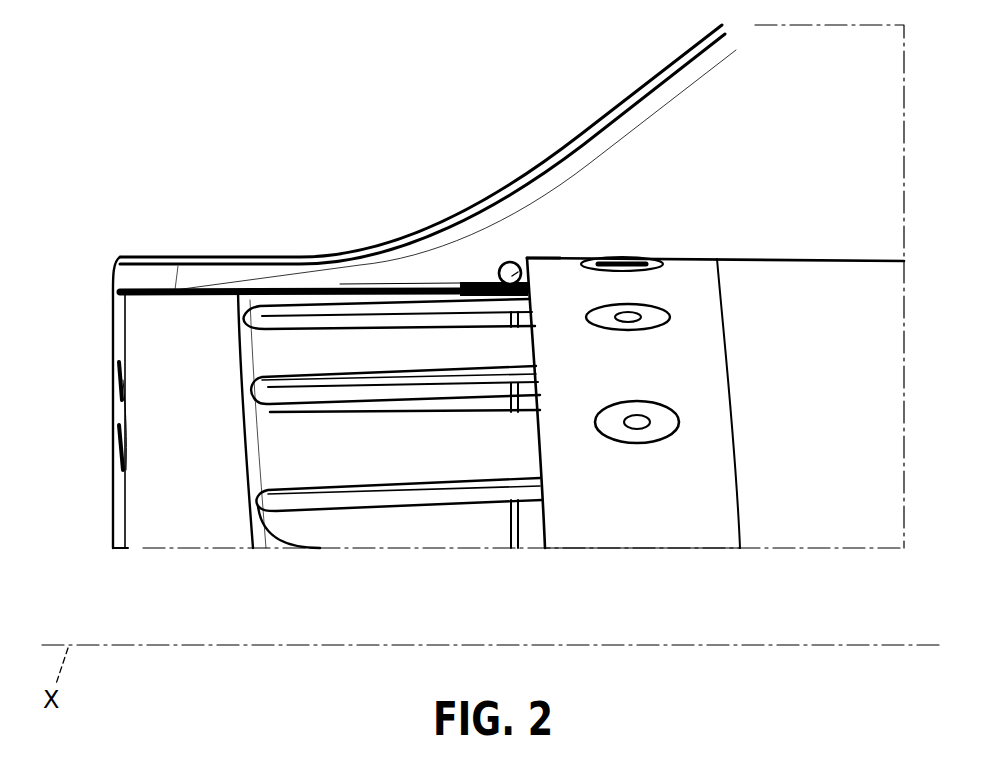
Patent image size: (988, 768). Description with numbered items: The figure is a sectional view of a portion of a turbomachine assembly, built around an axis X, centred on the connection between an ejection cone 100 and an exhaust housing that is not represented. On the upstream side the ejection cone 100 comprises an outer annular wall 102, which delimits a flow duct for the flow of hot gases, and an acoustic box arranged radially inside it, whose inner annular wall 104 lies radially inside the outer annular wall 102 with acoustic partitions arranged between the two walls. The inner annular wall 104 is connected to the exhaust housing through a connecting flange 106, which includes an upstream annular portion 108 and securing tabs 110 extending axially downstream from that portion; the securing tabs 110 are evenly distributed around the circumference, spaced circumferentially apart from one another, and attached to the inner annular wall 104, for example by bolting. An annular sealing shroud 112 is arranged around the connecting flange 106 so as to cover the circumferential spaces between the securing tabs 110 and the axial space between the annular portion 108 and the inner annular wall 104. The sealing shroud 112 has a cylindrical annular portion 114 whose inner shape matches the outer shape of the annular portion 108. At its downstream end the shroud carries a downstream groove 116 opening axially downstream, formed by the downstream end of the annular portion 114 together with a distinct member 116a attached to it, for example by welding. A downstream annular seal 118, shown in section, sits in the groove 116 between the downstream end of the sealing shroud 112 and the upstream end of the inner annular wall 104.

The ejection cone 100 is at (272, 156).
The outer annular wall 102 is at (592, 165).
The inner annular wall 104 is at (703, 500).
The connecting flange 106 is at (97, 506).
The upstream annular portion 108 is at (192, 500).
The securing tabs 110 is at (352, 450).
The annular sealing shroud 112 is at (104, 287).
The annular portion 114 is at (238, 298).
The downstream groove 116 is at (492, 257).
The distinct member 116a is at (513, 260).
The downstream annular seal 118 is at (532, 260).